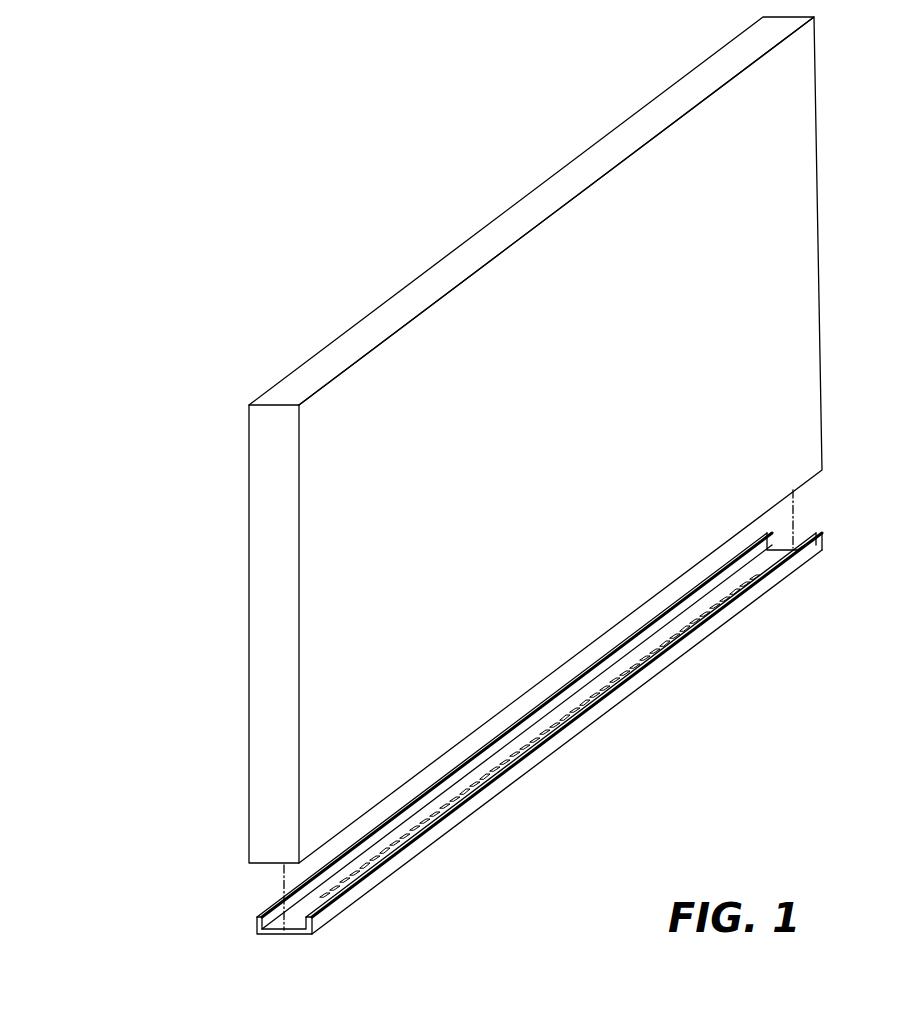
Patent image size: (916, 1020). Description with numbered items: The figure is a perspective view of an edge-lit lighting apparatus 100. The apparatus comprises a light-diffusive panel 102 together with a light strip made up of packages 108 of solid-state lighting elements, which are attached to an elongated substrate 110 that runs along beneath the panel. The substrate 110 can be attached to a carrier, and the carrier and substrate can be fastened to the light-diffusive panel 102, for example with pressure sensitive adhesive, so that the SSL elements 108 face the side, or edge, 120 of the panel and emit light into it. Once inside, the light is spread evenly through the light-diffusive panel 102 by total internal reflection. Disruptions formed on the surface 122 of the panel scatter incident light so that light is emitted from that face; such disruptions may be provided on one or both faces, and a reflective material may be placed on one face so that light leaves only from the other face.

The edge-lit lighting apparatus 100 is at (457, 105).
The light-diffusive panel 102 is at (336, 339).
The surface of the panel 122 is at (772, 273).
The elongated substrate 110 is at (795, 571).
The packages of solid-state lighting elements 108 is at (530, 747).
The side (edge) of the panel 120 is at (323, 846).